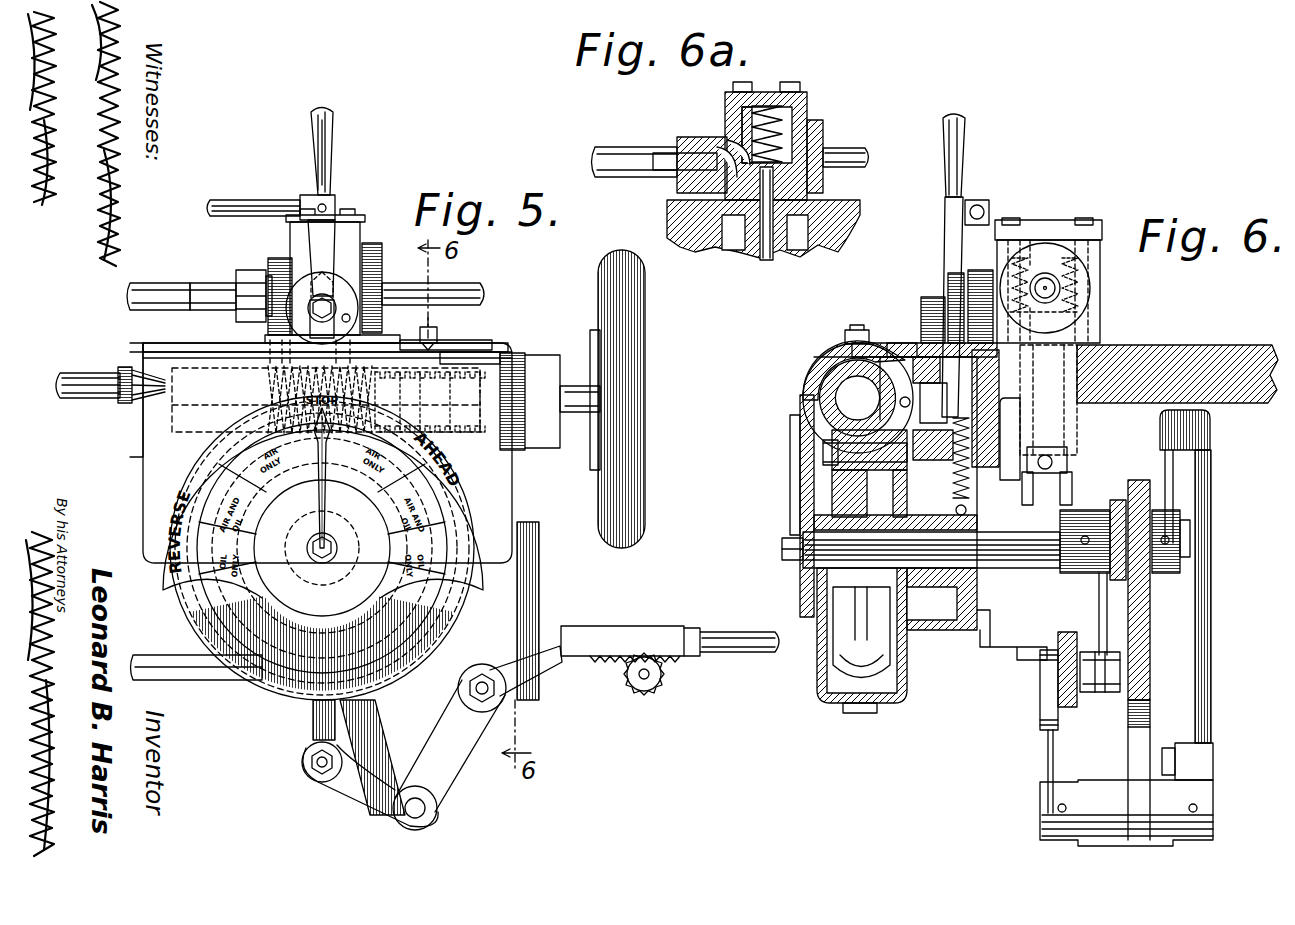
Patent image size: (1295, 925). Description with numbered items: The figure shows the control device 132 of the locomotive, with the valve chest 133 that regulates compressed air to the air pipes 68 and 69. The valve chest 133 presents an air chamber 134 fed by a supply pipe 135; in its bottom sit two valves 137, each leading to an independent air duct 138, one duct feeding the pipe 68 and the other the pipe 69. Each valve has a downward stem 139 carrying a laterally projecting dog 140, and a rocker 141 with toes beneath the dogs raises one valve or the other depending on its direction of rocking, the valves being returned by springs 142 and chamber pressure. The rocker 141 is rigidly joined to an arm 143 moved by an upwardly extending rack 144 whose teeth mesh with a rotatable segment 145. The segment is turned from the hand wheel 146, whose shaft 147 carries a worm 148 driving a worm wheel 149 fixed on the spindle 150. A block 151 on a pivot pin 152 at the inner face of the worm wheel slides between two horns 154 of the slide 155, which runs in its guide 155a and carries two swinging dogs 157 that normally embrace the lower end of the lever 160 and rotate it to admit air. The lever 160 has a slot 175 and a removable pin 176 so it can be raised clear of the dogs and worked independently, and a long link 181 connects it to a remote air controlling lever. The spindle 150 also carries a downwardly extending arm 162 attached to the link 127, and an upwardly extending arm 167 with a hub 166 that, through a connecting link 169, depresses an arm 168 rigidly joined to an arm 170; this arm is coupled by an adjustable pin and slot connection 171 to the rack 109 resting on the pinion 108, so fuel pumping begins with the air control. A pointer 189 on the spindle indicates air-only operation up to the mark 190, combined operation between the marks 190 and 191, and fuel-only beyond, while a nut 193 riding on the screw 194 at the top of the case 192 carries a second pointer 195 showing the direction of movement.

In FIG. 5, the air pipe 68 is at (140, 300).
In FIG. 6A, the air pipe 68 is at (603, 157).
In FIG. 5, the air pipe 69 is at (184, 298).
In FIG. 6A, the air pipe 69 is at (643, 173).
In FIG. 5, the pinion 108 is at (651, 690).
In FIG. 5, the rack 109 is at (603, 650).
In FIG. 5, the link 127 is at (190, 673).
In FIG. 6, the link 127 is at (1098, 692).
In FIG. 5, the control device 132 is at (365, 314).
In FIG. 6, the control device 132 is at (1177, 354).
In FIG. 6A, the valve chest 133 is at (810, 113).
In FIG. 6, the valve chest 133 is at (1100, 237).
In FIG. 6A, the air chamber 134 is at (750, 140).
In FIG. 6, the air chamber 134 is at (1047, 257).
In FIG. 5, the supply pipe 135 is at (483, 279).
In FIG. 6A, the supply pipe 135 is at (850, 167).
In FIG. 6, the supply pipe 135 is at (1073, 292).
In FIG. 6A, the valve 137 is at (818, 133).
In FIG. 6, the valve 137 is at (1073, 310).
In FIG. 6A, the air duct 138 is at (737, 183).
In FIG. 6, the air duct 138 is at (957, 293).
In FIG. 6A, the valve stem 139 is at (762, 250).
In FIG. 6, the valve stem 139 is at (1007, 407).
In FIG. 6, the dog 140 is at (1077, 448).
In FIG. 6, the rocker 141 is at (1065, 483).
In FIG. 6A, the spring 142 is at (763, 100).
In FIG. 6, the spring 142 is at (1027, 240).
In FIG. 6, the arm 143 is at (1010, 463).
In FIG. 5, the rack 144 is at (282, 280).
In FIG. 6, the rack 144 is at (967, 370).
In FIG. 5, the segment 145 is at (368, 240).
In FIG. 6, the segment 145 is at (980, 270).
In FIG. 5, the hand wheel 146 is at (633, 503).
In FIG. 5, the shaft 147 is at (60, 362).
In FIG. 5, the worm 148 is at (263, 373).
In FIG. 6, the worm 148 is at (838, 415).
In FIG. 5, the worm wheel 149 is at (200, 623).
In FIG. 6, the worm wheel 149 is at (847, 630).
In FIG. 6, the spindle 150 is at (830, 540).
In FIG. 6, the block 151 is at (852, 453).
In FIG. 6, the pivot pin 152 is at (853, 453).
In FIG. 6, the horns 154 is at (950, 500).
In FIG. 6, the slide 155 is at (897, 433).
In FIG. 6, the guide 155a is at (932, 355).
In FIG. 6, the dog 157 is at (924, 403).
In FIG. 5, the lever 160 is at (330, 140).
In FIG. 6, the lever 160 is at (950, 232).
In FIG. 6, the arm 162 is at (1102, 575).
In FIG. 6, the hub 166 is at (1168, 575).
In FIG. 6, the arm 167 is at (1172, 490).
In FIG. 5, the arm 168 is at (348, 780).
In FIG. 6, the arm 168 is at (1213, 770).
In FIG. 5, the connecting link 169 is at (323, 713).
In FIG. 6, the connecting link 169 is at (1211, 594).
In FIG. 5, the arm 170 is at (453, 773).
In FIG. 6, the arm 170 is at (1047, 752).
In FIG. 5, the pin and slot connection 171 is at (490, 668).
In FIG. 5, the slot 175 is at (313, 328).
In FIG. 5, the removable pin 176 is at (345, 300).
In FIG. 5, the long link 181 is at (238, 200).
In FIG. 6, the long link 181 is at (975, 200).
In FIG. 5, the pointer 189 is at (323, 500).
In FIG. 6, the pointer 189 is at (792, 450).
In FIG. 5, the mark 190 is at (415, 488).
In FIG. 5, the mark 191 is at (420, 517).
In FIG. 6, the case 192 is at (887, 343).
In FIG. 5, the nut 193 is at (463, 330).
In FIG. 6, the nut 193 is at (852, 343).
In FIG. 5, the screw 194 is at (468, 355).
In FIG. 6, the screw 194 is at (803, 397).
In FIG. 5, the pointer 195 is at (431, 336).
In FIG. 6, the pointer 195 is at (843, 353).